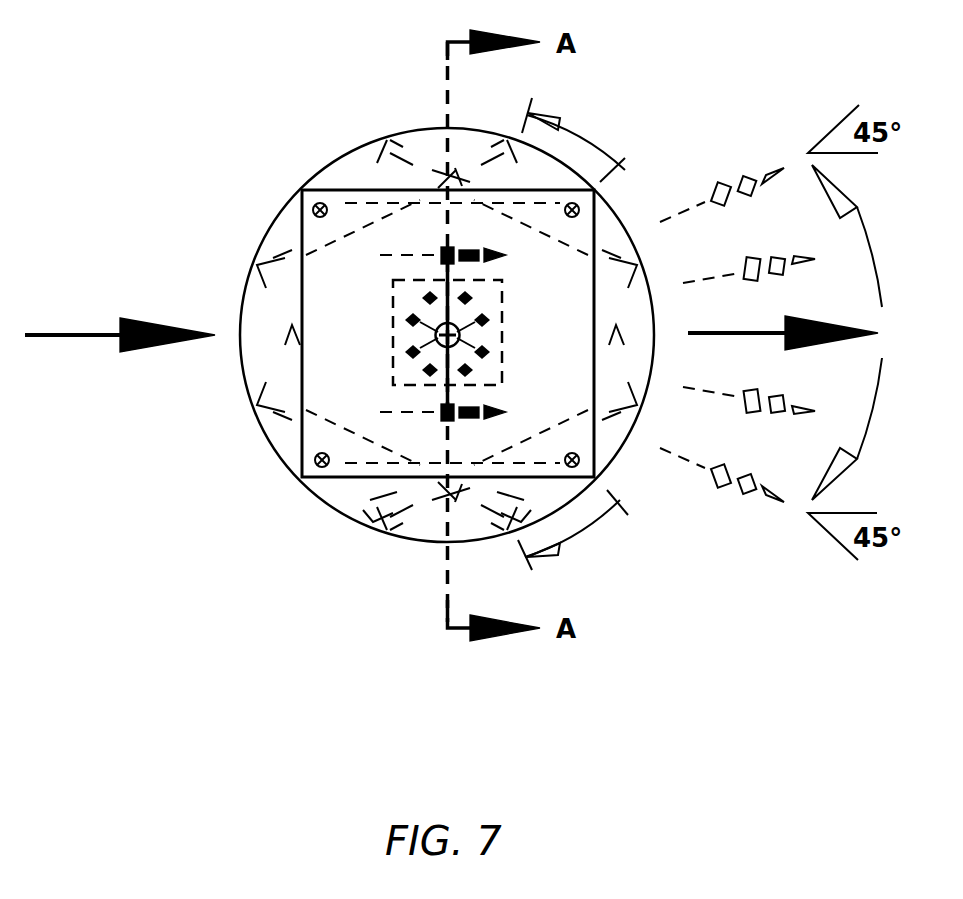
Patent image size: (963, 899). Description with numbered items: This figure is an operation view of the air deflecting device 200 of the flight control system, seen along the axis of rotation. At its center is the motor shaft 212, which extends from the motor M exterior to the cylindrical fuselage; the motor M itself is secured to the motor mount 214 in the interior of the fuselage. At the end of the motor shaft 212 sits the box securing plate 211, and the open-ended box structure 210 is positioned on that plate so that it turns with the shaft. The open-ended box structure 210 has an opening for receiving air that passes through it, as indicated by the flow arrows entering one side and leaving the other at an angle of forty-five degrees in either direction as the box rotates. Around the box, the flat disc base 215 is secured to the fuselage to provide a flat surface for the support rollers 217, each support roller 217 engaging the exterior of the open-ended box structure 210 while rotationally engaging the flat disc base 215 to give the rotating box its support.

The air deflecting device 200 is at (252, 115).
The flat disc base 215 is at (358, 150).
The open-ended box structure 210 is at (517, 330).
The motor mount 214 is at (495, 388).
The box securing plate 211 is at (437, 345).
The motor shaft 212 is at (425, 337).
The motor M is at (410, 318).
The support roller 217 is at (610, 208).